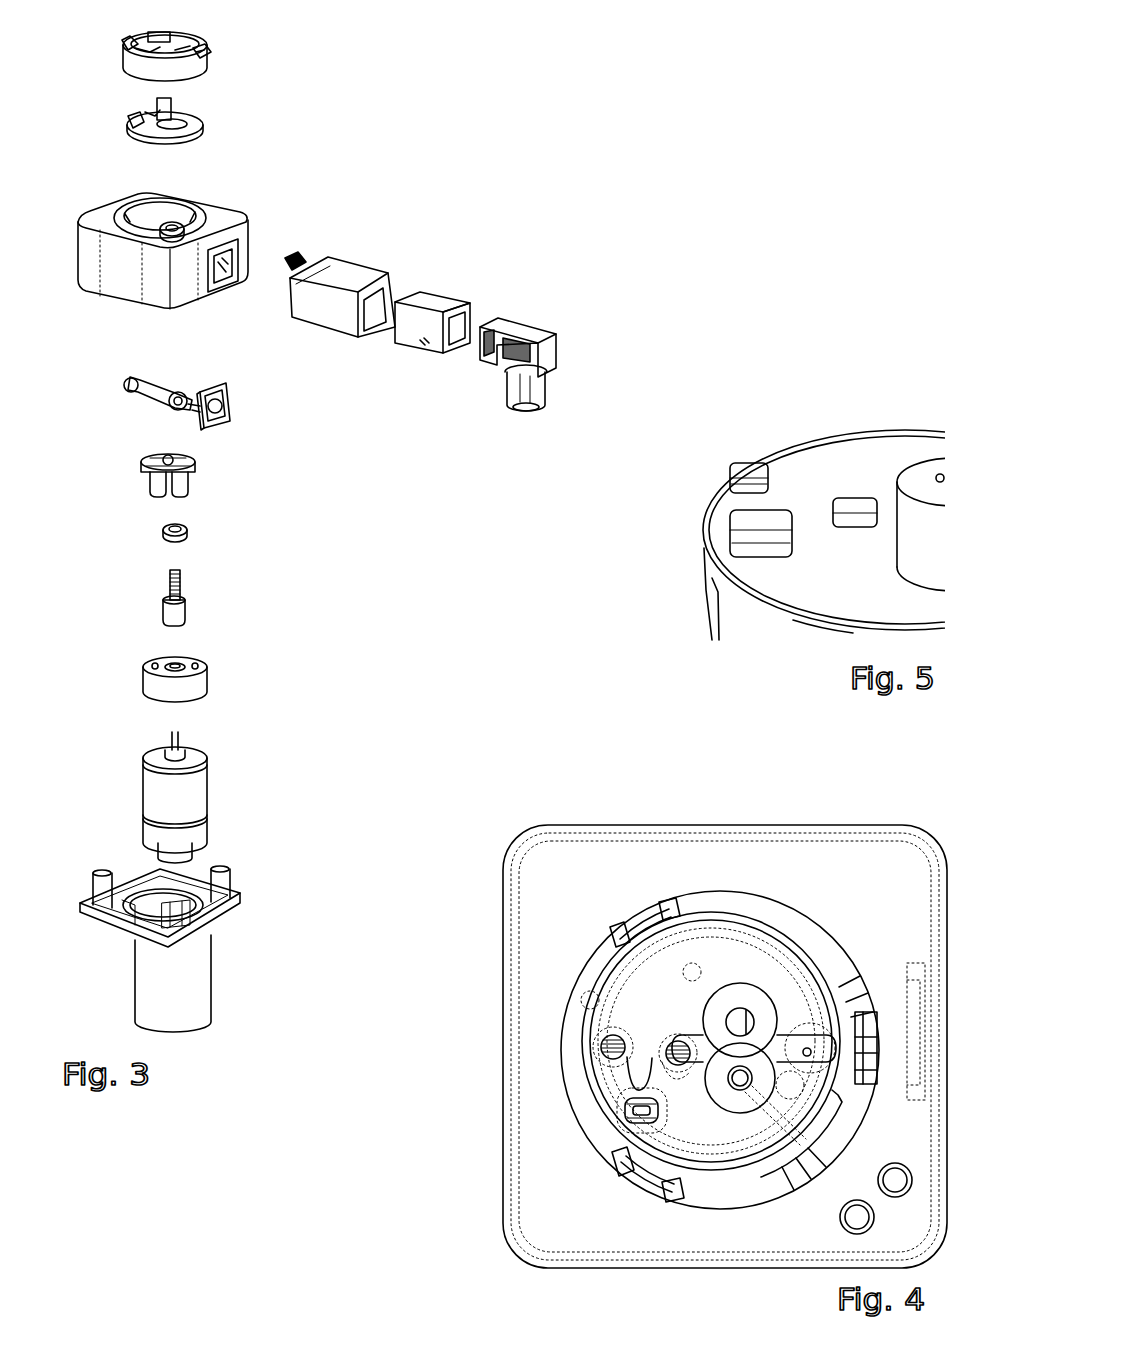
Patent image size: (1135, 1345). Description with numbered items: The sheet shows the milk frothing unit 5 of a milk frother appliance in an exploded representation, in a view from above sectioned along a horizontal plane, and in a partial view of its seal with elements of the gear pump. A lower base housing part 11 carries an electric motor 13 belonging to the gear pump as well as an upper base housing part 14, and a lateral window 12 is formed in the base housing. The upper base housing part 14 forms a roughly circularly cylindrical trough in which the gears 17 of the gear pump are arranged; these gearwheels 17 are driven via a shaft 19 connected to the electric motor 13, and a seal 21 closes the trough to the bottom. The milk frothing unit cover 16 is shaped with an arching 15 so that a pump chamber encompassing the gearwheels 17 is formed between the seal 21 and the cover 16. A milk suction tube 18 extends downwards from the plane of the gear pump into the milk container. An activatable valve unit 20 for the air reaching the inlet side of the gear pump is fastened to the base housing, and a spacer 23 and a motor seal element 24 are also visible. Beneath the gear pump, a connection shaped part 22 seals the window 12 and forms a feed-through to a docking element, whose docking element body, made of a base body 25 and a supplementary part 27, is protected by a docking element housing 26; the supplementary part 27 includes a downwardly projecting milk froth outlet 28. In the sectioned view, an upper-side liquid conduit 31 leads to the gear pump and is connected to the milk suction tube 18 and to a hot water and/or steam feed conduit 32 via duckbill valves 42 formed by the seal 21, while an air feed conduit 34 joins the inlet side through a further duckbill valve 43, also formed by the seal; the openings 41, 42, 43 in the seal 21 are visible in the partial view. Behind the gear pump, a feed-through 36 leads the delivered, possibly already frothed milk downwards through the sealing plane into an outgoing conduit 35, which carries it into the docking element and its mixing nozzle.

In FIG. 3, the milk frothing unit 5 is at (350, 180).
In FIG. 3, the lower base housing part 11 is at (187, 975).
In FIG. 3, the lateral window 12 is at (230, 287).
In FIG. 3, the electric motor 13 is at (197, 773).
In FIG. 3, the upper base housing part 14 is at (93, 258).
In FIG. 3, the arching 15 is at (188, 45).
In FIG. 3, the milk frothing unit cover 16 is at (208, 53).
In FIG. 3, the gears 17 is at (173, 223).
In FIG. 5, the gears 17 is at (913, 472).
In FIG. 4, the gears 17 is at (723, 1002).
In FIG. 4, the milk suction tube 18 is at (607, 1098).
In FIG. 3, the shaft 19 is at (173, 572).
In FIG. 3, the activatable valve unit 20 is at (187, 487).
In FIG. 3, the seal 21 is at (127, 137).
In FIG. 5, the seal 21 is at (812, 580).
In FIG. 4, the seal 21 is at (787, 1003).
In FIG. 3, the connection shaped part 22 is at (227, 400).
In FIG. 3, the spacer 23 is at (205, 675).
In FIG. 3, the motor seal element 24 is at (167, 532).
In FIG. 3, the base body 25 is at (443, 353).
In FIG. 3, the docking element housing 26 is at (343, 280).
In FIG. 3, the supplementary part 27 is at (518, 332).
In FIG. 3, the milk froth outlet 28 is at (515, 412).
In FIG. 4, the upper-side liquid conduit 31 is at (667, 1078).
In FIG. 3, the hot water and/or steam feed conduit 32 is at (180, 385).
In FIG. 4, the hot water and/or steam feed conduit 32 is at (737, 932).
In FIG. 4, the air feed conduit 34 is at (765, 1130).
In FIG. 3, the outgoing conduit 35 is at (208, 423).
In FIG. 4, the outgoing conduit 35 is at (835, 1030).
In FIG. 4, the feed-through 36 is at (818, 1040).
In FIG. 5, the first opening 41 is at (757, 478).
In FIG. 4, the first opening 41 is at (600, 1042).
In FIG. 5, the duckbill valve 42 is at (748, 532).
In FIG. 4, the duckbill valve 42 is at (622, 1117).
In FIG. 5, the duckbill valve 43 is at (853, 510).
In FIG. 4, the duckbill valve 43 is at (668, 1045).